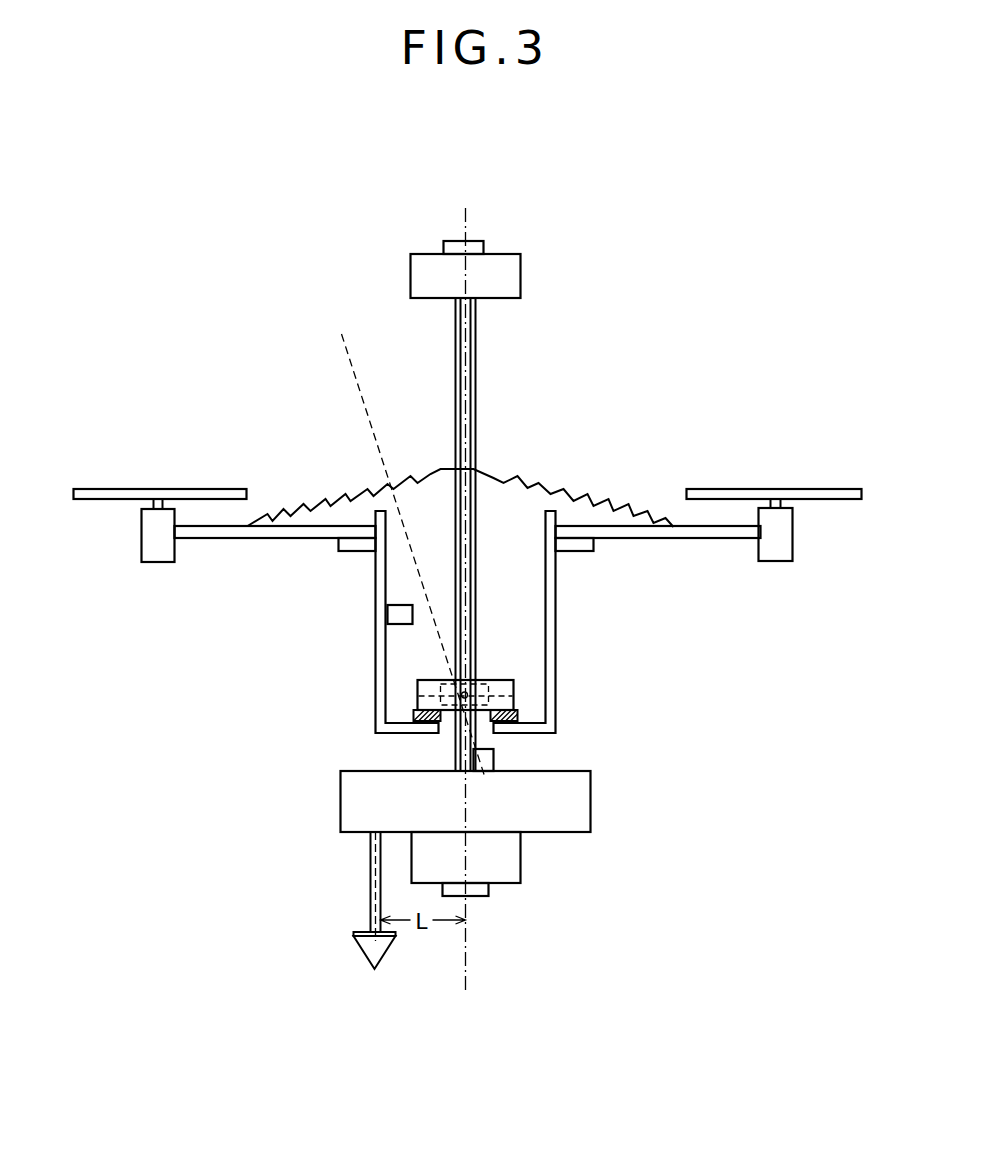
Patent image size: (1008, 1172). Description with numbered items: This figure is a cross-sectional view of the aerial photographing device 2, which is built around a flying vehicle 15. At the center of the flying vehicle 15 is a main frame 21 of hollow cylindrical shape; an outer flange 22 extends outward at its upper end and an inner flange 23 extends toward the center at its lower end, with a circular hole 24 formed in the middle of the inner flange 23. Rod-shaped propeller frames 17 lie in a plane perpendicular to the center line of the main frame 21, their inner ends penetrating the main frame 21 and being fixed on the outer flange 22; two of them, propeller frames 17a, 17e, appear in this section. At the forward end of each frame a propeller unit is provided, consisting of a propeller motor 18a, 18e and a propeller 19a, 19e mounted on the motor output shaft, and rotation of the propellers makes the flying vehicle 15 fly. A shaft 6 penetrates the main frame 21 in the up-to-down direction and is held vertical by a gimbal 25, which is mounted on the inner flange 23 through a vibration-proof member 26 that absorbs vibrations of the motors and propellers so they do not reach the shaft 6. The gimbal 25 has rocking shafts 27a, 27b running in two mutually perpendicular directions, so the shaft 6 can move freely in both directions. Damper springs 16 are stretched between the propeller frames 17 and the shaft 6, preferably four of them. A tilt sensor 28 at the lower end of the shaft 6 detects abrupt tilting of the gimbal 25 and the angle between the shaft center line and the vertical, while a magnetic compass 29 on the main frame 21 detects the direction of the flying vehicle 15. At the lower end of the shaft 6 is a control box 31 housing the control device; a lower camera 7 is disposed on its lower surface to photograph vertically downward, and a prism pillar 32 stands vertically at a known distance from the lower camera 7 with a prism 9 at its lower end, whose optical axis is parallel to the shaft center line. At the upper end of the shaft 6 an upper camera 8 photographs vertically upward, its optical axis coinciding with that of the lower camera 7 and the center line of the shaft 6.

The aerial photographing device 2 is at (291, 171).
The shaft 6 is at (474, 380).
The lower camera 7 is at (520, 857).
The upper camera 8 is at (520, 277).
The prism 9 is at (367, 952).
The flying vehicle 15 is at (674, 414).
The damper spring 16 is at (327, 497).
The propeller frames 17 is at (734, 550).
The propeller frame 17a is at (222, 537).
The propeller frame 17e is at (680, 537).
The propeller motor 18a is at (163, 561).
The propeller motor 18e is at (793, 545).
The propeller 19a is at (108, 488).
The propeller 19e is at (817, 488).
The main frame 21 is at (555, 643).
The outer flange 22 is at (582, 550).
The inner flange 23 is at (388, 733).
The circular hole 24 is at (445, 730).
The gimbal 25 is at (493, 678).
The vibration-proof member 26 is at (410, 715).
The rocking shaft 27a is at (457, 683).
The rocking shaft 27b is at (498, 692).
The tilt sensor 28 is at (497, 755).
The magnetic compass 29 is at (393, 604).
The control box 31 is at (590, 800).
The prism pillar 32 is at (370, 867).